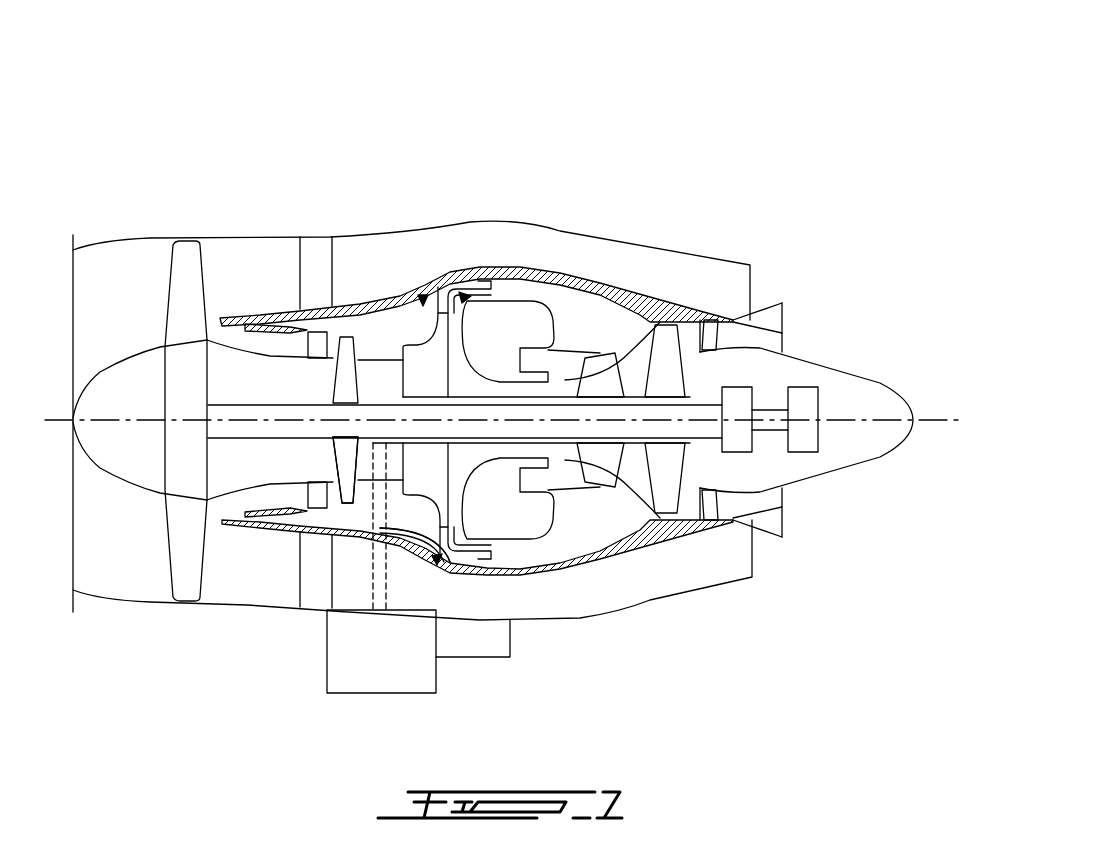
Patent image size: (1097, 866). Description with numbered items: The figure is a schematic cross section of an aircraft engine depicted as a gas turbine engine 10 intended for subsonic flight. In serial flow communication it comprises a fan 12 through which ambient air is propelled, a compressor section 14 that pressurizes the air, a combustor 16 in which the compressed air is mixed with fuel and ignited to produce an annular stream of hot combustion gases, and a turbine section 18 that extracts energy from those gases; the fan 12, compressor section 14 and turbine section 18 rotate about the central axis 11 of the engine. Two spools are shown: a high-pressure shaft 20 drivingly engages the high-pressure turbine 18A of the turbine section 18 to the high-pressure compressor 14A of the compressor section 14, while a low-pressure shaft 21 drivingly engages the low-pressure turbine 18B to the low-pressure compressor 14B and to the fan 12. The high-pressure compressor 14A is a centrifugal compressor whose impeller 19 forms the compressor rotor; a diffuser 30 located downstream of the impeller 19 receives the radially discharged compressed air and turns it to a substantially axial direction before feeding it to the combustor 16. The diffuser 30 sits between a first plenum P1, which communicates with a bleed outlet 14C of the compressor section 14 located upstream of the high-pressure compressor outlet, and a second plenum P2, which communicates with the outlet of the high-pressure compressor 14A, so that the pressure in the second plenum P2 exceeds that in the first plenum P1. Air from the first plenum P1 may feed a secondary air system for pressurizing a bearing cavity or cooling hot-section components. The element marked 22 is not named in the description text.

The gas turbine engine 10 is at (676, 128).
The central axis 11 is at (940, 420).
The fan 12 is at (183, 537).
The compressor section 14 is at (373, 343).
The high-pressure compressor 14A is at (380, 497).
The low-pressure compressor 14B is at (345, 462).
The bleed outlet 14C is at (402, 315).
The combustor 16 is at (532, 313).
The turbine section 18 is at (634, 472).
The high-pressure turbine 18A is at (603, 375).
The low-pressure turbine 18B is at (667, 353).
The impeller 19 is at (415, 545).
The high-pressure shaft 20 is at (473, 447).
The low-pressure shaft 21 is at (255, 405).
The electric machine / generator 22 is at (790, 387).
The diffuser 30 is at (733, 387).
The first plenum P1 is at (423, 298).
The second plenum P2 is at (465, 295).